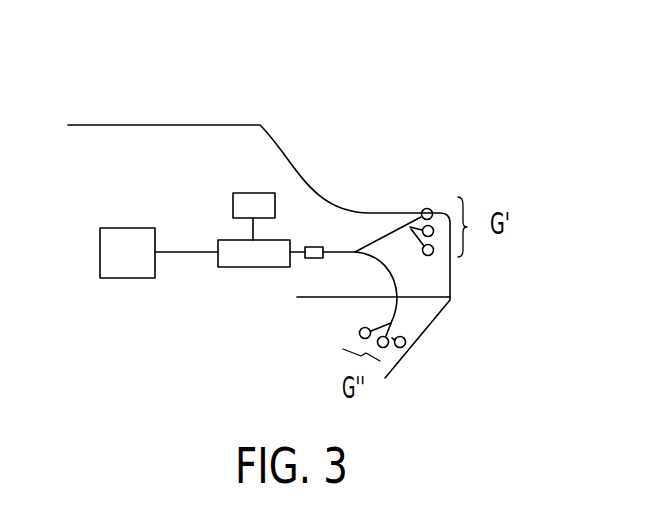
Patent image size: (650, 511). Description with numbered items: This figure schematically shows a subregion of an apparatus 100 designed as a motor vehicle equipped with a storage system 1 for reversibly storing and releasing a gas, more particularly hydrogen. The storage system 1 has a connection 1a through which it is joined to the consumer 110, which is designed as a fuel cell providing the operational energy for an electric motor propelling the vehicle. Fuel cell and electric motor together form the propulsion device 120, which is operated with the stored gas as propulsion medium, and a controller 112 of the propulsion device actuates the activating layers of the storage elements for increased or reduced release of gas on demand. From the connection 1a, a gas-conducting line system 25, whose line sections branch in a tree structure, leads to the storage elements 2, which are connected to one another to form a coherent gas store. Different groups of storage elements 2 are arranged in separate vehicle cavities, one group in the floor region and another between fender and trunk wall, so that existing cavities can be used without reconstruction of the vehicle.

The apparatus 100 is at (262, 125).
The controller 112 is at (233, 200).
The consumer 110 is at (248, 268).
The propulsion device 120 is at (123, 278).
The connection 1a is at (318, 258).
The gas-conducting line system 25 is at (383, 240).
The storage element 2 is at (429, 207).
The storage system 1 is at (398, 282).